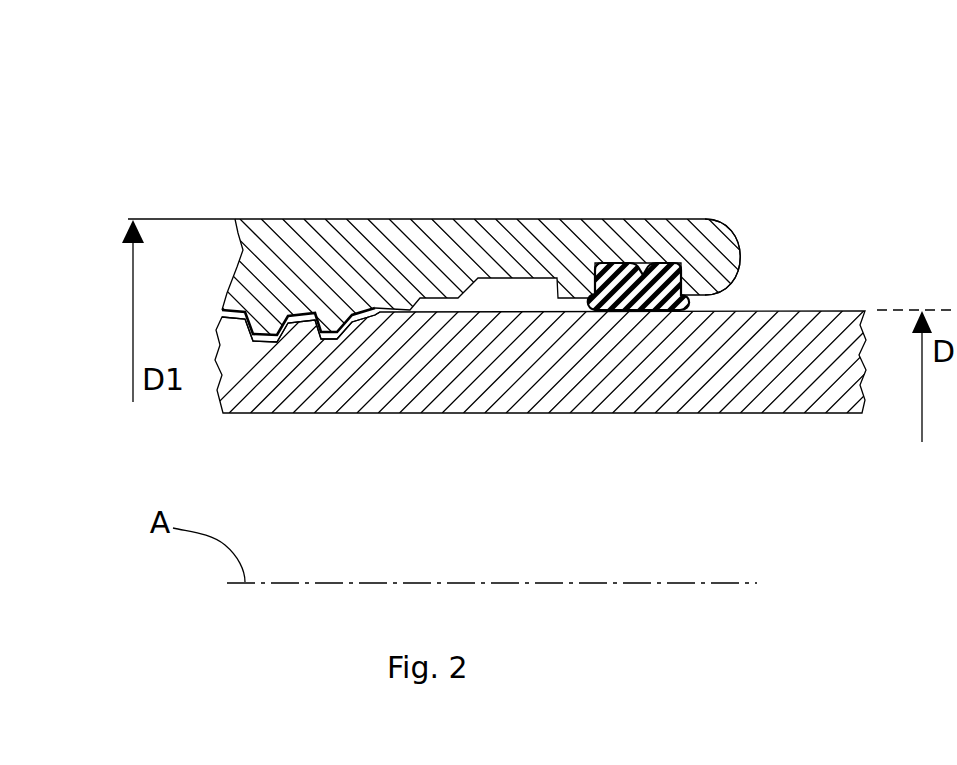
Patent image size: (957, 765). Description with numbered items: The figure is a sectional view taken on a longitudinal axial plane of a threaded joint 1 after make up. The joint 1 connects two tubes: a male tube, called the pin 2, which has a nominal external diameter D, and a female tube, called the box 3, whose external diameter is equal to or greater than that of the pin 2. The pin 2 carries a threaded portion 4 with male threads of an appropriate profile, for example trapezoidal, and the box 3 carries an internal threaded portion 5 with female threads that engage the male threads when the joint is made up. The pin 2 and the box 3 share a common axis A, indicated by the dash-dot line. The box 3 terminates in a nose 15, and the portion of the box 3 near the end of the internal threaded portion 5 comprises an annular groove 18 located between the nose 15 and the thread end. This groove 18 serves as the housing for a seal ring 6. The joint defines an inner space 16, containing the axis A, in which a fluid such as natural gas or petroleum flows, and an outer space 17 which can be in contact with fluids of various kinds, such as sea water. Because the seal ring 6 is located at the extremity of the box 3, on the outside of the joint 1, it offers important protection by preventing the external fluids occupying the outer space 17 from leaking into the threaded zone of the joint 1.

The threaded joint 1 is at (534, 271).
The pin 2 is at (582, 391).
The box 3 is at (496, 227).
The threaded portion 4 is at (363, 340).
The internal threaded portion 5 is at (222, 311).
The seal ring 6 is at (693, 306).
The nose 15 is at (730, 232).
The inner space 16 is at (538, 538).
The outer space 17 is at (497, 113).
The annular groove 18 is at (654, 263).